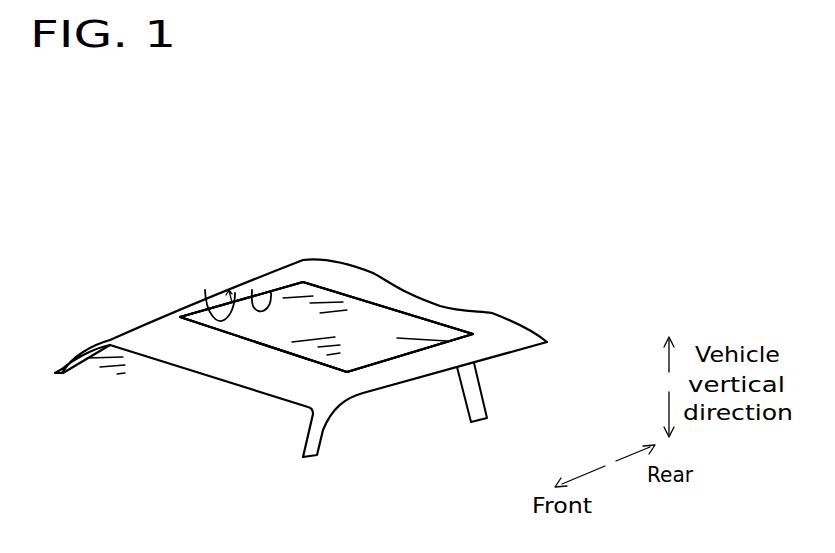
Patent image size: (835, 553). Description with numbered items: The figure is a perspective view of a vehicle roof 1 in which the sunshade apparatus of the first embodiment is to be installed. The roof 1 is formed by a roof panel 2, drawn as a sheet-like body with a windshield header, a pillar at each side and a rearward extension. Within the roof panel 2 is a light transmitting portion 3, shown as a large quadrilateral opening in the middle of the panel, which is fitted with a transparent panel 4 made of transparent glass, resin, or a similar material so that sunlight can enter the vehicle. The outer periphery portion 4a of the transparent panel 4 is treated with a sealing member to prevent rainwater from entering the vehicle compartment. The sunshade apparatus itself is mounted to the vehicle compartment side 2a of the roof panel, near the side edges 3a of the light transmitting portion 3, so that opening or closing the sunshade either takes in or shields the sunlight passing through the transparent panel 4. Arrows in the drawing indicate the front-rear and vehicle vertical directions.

The roof 1 is at (277, 196).
The roof panel 2 is at (165, 320).
The vehicle compartment side 2a is at (205, 290).
The light transmitting portion 3 is at (373, 309).
The side edges 3a is at (271, 293).
The transparent panel 4 is at (476, 345).
The outer periphery portion 4a is at (277, 352).